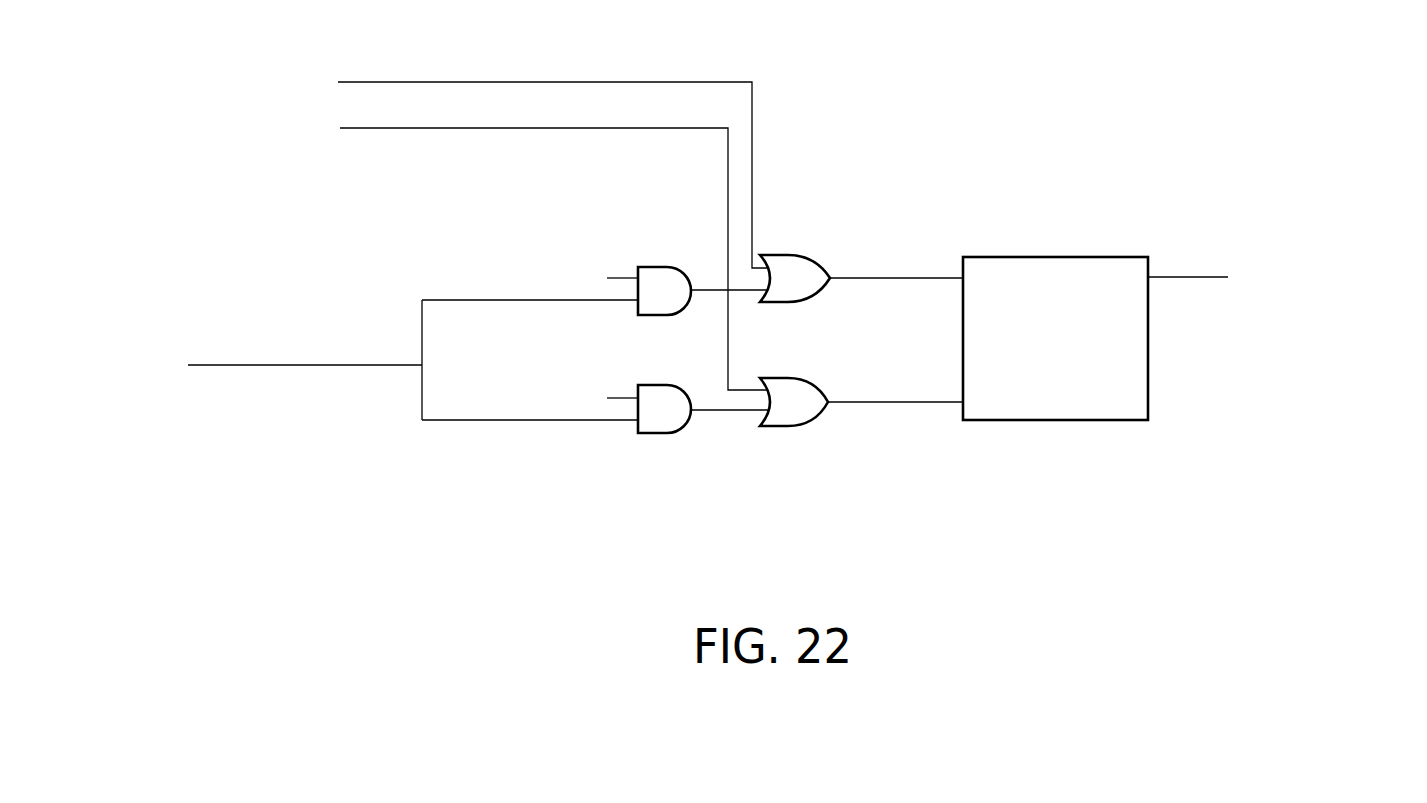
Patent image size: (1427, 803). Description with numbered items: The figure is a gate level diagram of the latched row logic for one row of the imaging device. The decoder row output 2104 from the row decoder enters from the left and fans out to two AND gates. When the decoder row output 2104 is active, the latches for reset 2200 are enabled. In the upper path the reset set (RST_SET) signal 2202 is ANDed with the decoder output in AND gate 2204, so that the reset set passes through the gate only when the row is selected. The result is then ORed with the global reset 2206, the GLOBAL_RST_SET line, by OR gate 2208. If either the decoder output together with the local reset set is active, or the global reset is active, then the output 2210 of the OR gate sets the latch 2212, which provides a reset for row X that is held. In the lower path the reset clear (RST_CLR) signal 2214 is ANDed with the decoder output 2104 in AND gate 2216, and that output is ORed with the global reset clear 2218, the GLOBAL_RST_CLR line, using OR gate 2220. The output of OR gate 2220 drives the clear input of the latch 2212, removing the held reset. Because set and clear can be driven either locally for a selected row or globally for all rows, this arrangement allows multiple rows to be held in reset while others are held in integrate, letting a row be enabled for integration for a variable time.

The decoder row output 2104 is at (297, 367).
The latch for reset 2200 is at (1185, 273).
The reset set (RST_SET) signal 2202 is at (520, 262).
The AND gate 2204 is at (660, 276).
The global reset 2206 is at (753, 129).
The OR gate 2208 is at (807, 273).
The output 2210 is at (906, 275).
The latch 2212 is at (1098, 283).
The reset clear (RST_CLR) signal 2214 is at (520, 384).
The AND gate 2216 is at (658, 421).
The global reset clear 2218 is at (729, 331).
The OR gate 2220 is at (808, 398).